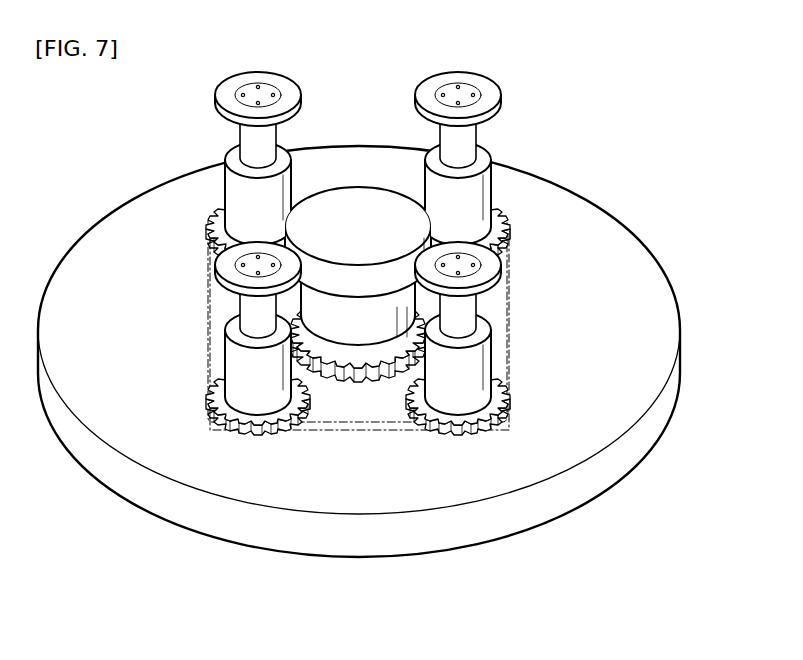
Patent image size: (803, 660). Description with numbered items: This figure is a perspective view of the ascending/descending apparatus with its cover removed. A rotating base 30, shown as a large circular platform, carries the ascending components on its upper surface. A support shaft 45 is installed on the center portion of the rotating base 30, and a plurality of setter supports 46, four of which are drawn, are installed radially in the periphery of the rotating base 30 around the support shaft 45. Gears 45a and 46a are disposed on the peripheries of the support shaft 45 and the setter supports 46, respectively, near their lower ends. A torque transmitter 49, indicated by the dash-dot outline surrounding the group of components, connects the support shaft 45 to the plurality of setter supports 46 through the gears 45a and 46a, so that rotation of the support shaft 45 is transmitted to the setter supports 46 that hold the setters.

The rotating base 30 is at (597, 420).
The support shaft 45 is at (357, 207).
The gear 45a is at (353, 353).
The setter support 46 is at (487, 185).
The gear 46a is at (505, 223).
The torque transmitter 49 is at (507, 317).